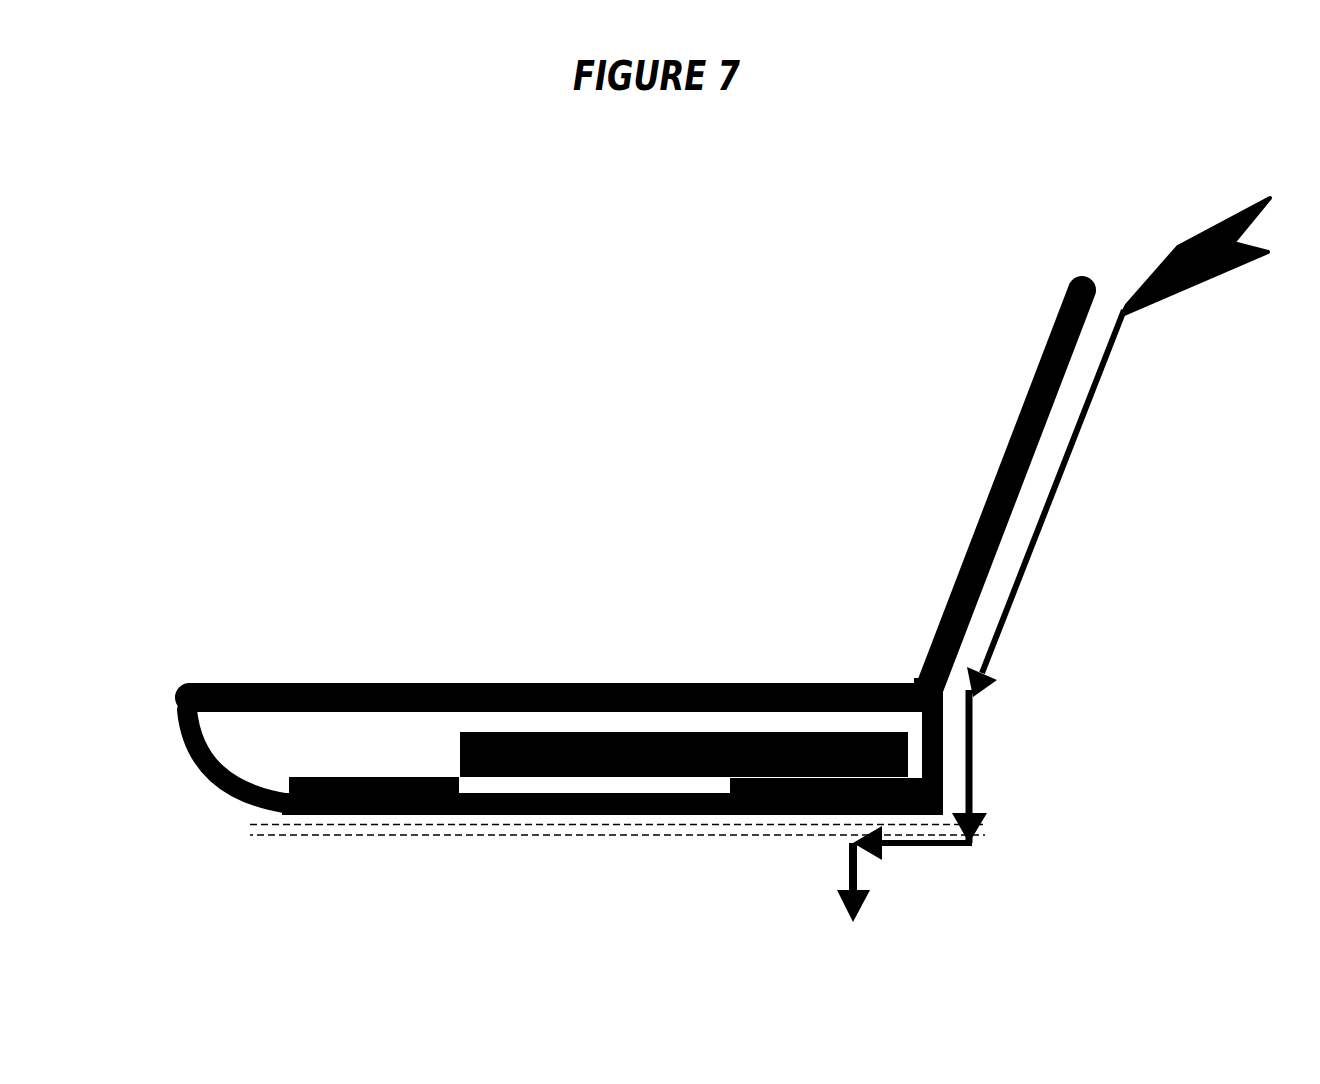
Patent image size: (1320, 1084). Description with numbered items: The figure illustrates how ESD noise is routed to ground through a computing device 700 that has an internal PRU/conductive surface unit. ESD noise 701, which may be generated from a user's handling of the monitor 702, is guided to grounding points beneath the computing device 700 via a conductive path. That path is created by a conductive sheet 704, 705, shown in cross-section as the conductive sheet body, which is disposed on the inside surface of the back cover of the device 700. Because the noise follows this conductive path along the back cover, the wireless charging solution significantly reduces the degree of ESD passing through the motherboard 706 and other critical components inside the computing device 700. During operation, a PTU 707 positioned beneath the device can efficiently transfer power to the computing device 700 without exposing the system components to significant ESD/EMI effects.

The computing device 700 is at (322, 399).
The ESD noise 701 is at (1080, 425).
The monitor 702 is at (1047, 355).
The conductive sheet 704 is at (363, 780).
The conductive sheet body 705 is at (770, 803).
The motherboard 706 is at (588, 733).
The PTU 707 is at (607, 835).